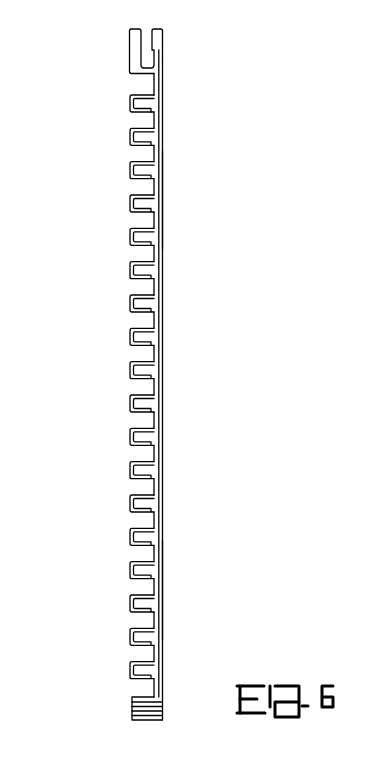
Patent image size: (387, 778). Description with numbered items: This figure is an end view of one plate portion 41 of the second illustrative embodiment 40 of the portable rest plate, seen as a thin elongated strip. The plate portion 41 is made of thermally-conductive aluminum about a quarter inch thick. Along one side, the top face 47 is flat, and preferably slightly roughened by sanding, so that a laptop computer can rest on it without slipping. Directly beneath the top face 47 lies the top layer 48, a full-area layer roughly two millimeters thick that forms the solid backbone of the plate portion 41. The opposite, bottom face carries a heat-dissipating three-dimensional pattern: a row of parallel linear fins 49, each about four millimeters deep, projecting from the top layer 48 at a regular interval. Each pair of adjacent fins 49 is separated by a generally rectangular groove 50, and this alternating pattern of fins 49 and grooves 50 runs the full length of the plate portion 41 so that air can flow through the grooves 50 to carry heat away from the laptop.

The second illustrative embodiment 40 is at (117, 189).
The plate portion 41 is at (163, 199).
The top face 47 is at (163, 590).
The top layer 48 is at (153, 313).
The linear fins 49 is at (130, 101).
The groove 50 is at (134, 485).